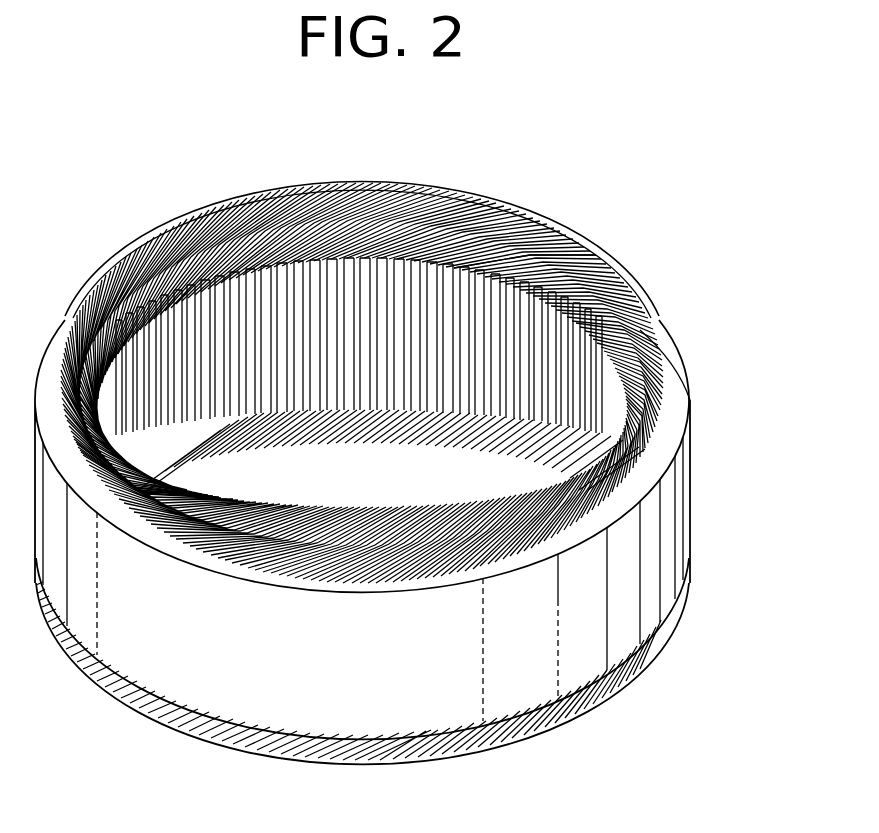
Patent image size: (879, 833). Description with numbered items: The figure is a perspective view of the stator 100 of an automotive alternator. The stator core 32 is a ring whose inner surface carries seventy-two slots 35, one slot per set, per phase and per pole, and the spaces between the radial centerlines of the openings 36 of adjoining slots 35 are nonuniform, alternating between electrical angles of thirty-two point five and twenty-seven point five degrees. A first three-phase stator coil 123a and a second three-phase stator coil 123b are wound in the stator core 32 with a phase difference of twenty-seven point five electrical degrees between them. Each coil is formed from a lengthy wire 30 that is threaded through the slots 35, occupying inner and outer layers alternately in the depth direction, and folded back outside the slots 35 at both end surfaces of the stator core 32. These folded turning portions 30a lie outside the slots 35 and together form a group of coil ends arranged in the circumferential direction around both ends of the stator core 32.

The stator 100 is at (222, 151).
The wire 30 is at (632, 267).
The turning portions 30a is at (661, 314).
The stator core 32 is at (695, 482).
The slots 35 is at (690, 452).
The openings 36 is at (452, 318).
The first three-phase stator coil 123a is at (670, 333).
The second three-phase stator coil 123b is at (450, 508).